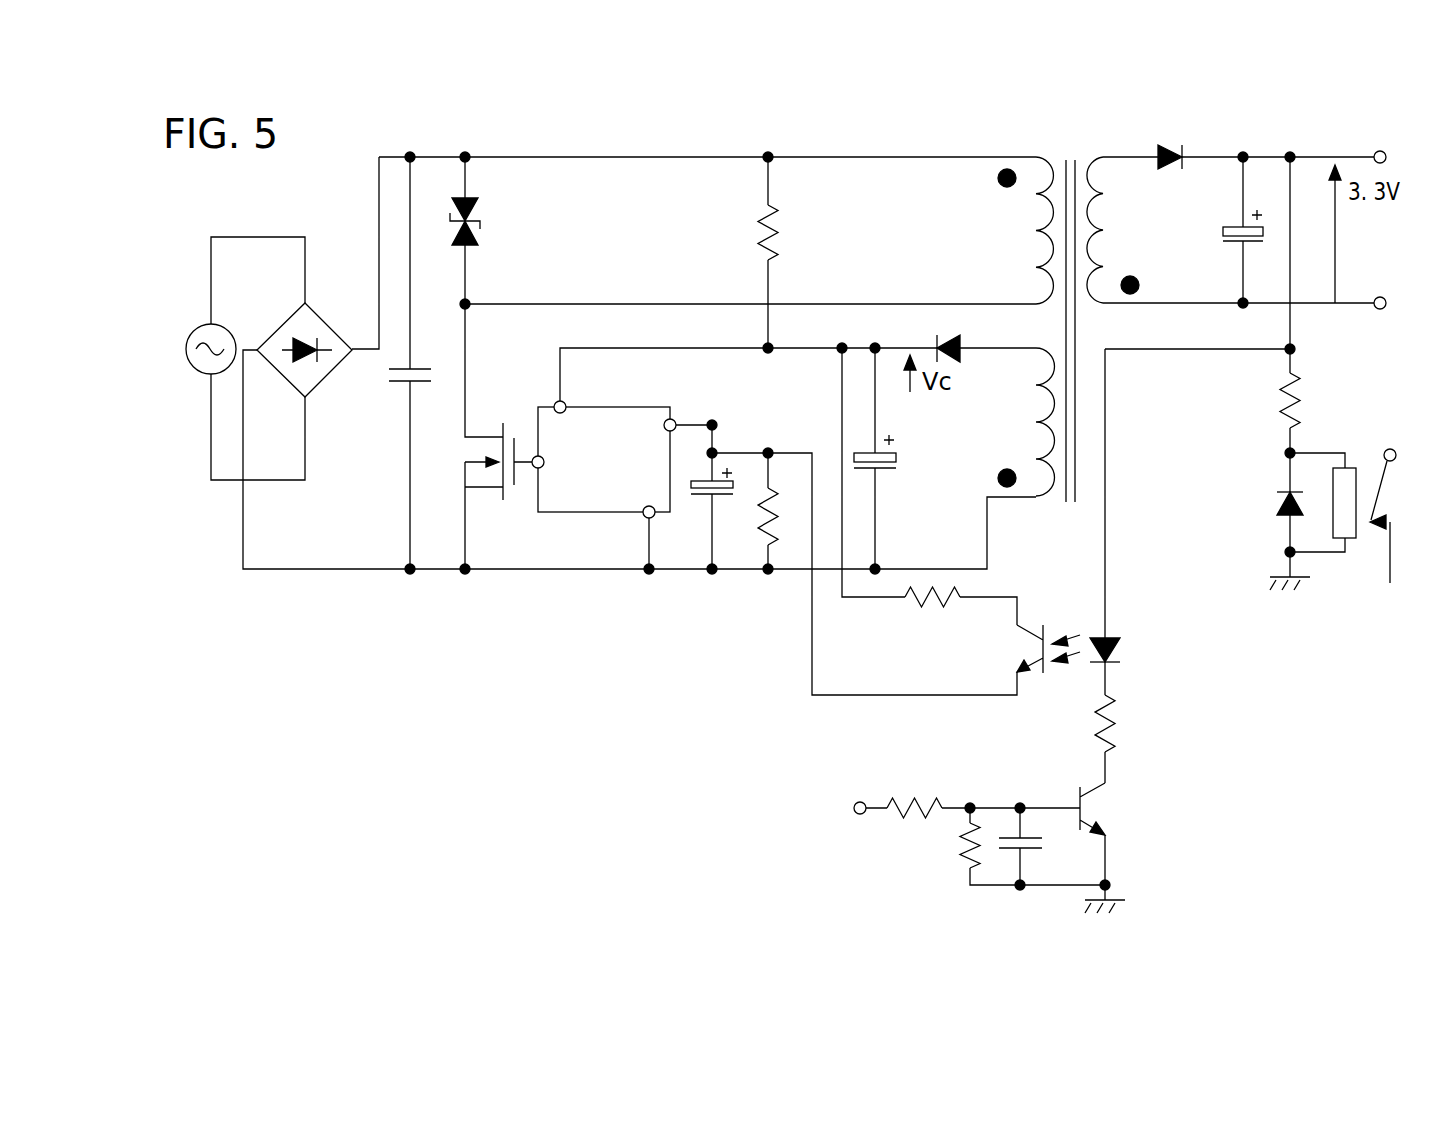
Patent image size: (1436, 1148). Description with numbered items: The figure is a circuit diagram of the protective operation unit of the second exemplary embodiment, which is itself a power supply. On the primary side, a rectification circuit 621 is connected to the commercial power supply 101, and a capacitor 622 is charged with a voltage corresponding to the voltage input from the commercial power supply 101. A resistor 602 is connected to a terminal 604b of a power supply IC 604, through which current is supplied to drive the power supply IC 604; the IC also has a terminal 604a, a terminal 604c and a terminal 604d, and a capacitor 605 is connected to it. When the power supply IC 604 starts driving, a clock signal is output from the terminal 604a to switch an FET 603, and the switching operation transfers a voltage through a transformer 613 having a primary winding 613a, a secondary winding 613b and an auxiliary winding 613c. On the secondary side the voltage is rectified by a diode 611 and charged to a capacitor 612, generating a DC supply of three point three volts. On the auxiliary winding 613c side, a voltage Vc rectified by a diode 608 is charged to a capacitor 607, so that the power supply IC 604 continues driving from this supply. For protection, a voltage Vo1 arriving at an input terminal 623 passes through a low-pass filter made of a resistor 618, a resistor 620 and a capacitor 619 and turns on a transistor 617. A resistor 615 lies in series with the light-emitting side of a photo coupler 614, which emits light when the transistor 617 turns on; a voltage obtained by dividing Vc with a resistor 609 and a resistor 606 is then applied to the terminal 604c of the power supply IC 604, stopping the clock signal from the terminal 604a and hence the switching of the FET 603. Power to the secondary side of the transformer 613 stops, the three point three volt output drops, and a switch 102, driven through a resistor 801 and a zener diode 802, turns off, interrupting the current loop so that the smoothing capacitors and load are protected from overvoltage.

The commercial power supply 101 is at (195, 327).
The switch 102 is at (1362, 455).
The resistor 602 is at (779, 229).
The FET 603 is at (505, 421).
The power supply IC 604 is at (604, 461).
The terminal 604a is at (567, 466).
The terminal 604b is at (572, 422).
The terminal 604c is at (644, 437).
The terminal 604d is at (640, 523).
The capacitor 605 is at (722, 497).
The resistor 606 is at (777, 532).
The capacitor 607 is at (897, 462).
The diode 608 is at (962, 340).
The resistor 609 is at (914, 606).
The diode 611 is at (1162, 150).
The capacitor 612 is at (1232, 243).
The transformer 613 is at (1071, 309).
The primary winding 613a is at (1015, 230).
The secondary winding 613b is at (1126, 230).
The auxiliary winding 613c is at (1016, 422).
The photo coupler 614 is at (1122, 646).
The resistor 615 is at (1118, 718).
The transistor 617 is at (1078, 797).
The resistor 618 is at (912, 800).
The capacitor 619 is at (1040, 838).
The resistor 620 is at (960, 850).
The rectification circuit 621 is at (330, 323).
The capacitor 622 is at (398, 383).
The input terminal 623 is at (853, 811).
The resistor 801 is at (1280, 400).
The zener diode 802 is at (1277, 500).